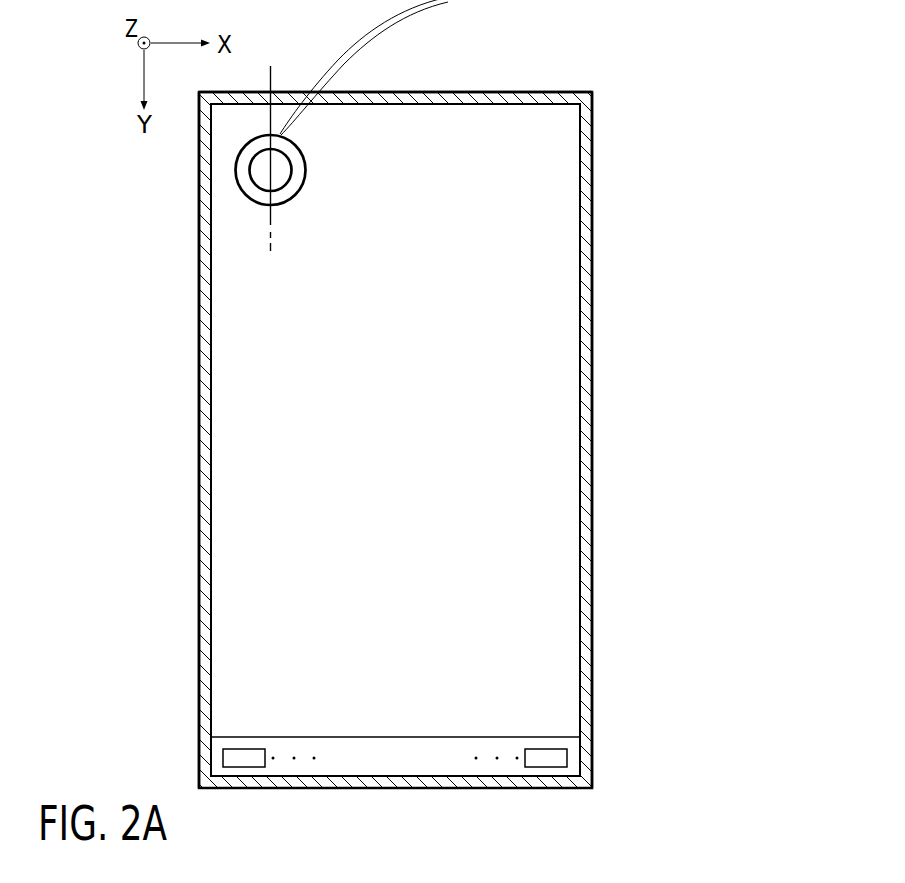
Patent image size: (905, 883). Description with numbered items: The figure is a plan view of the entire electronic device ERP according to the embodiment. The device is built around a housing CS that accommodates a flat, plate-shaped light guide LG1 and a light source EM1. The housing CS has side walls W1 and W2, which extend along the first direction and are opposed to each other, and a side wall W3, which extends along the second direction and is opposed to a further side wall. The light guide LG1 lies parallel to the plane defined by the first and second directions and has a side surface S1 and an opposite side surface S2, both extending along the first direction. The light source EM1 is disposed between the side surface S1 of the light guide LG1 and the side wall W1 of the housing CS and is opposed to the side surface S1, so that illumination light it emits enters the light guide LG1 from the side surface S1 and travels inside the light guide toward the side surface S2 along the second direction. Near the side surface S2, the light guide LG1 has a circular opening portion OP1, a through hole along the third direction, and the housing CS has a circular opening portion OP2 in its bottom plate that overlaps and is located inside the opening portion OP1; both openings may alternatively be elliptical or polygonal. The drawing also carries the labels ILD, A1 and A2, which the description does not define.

The housing CS is at (538, 806).
The side surface S1 is at (449, 750).
The side surface S2 is at (510, 93).
The side wall W1 is at (592, 442).
The side wall W2 is at (433, 100).
The side wall W3 is at (205, 434).
The light guide LG1 is at (567, 360).
The electronic device ERP is at (650, 222).
The illumination device ILD is at (650, 276).
The light source EM1 is at (248, 758).
The opening portion OP1 is at (297, 166).
The opening portion OP2 is at (264, 186).
The axis A1 is at (272, 174).
The axis A2 is at (272, 145).